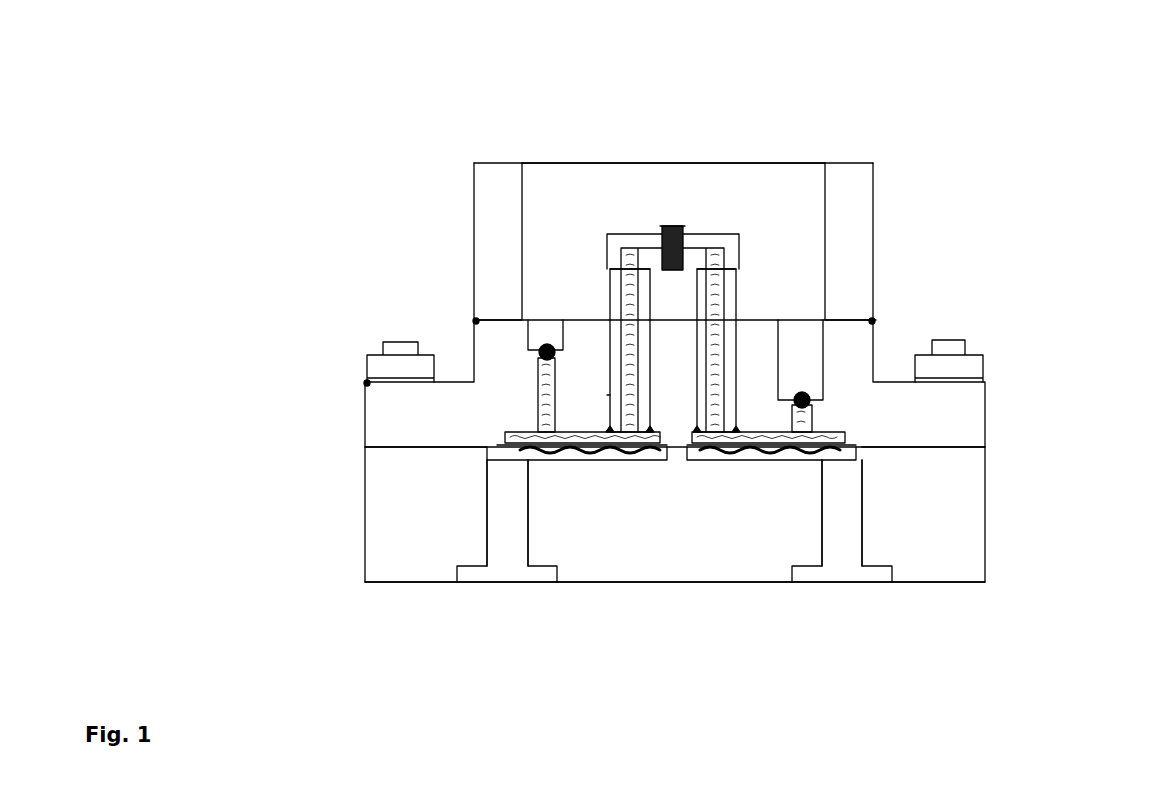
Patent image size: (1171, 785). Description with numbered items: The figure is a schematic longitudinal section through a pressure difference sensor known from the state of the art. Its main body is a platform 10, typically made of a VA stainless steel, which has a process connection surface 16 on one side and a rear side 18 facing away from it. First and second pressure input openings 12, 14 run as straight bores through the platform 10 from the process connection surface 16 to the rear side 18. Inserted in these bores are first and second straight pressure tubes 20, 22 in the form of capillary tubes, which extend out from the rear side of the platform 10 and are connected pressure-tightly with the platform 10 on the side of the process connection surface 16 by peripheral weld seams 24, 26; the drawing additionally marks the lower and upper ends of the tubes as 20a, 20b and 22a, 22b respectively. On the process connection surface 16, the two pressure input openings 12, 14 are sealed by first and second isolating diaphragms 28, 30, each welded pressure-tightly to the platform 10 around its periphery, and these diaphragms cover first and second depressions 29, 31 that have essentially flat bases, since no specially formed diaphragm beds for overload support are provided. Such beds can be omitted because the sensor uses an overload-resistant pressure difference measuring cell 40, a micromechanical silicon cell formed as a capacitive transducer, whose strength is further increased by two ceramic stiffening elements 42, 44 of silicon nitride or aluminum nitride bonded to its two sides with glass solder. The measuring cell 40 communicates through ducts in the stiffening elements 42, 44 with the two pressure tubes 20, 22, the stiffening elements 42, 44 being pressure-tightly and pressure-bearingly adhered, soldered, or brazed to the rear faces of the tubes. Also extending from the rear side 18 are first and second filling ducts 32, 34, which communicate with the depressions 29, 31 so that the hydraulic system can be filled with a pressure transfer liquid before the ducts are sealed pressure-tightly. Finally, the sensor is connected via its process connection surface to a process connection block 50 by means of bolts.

The platform 10 is at (367, 415).
The first pressure input opening 12 is at (600, 417).
The second pressure input opening 14 is at (750, 427).
The process connection surface 16 is at (413, 447).
The rear side 18 is at (572, 320).
The first pressure tube 20 is at (608, 292).
The lower end of first electrode 20a is at (607, 395).
The upper end of first electrode 20b is at (598, 272).
The second pressure tube 22 is at (737, 308).
The lower end of second electrode 22a is at (873, 320).
The upper end of second electrode 22b is at (745, 272).
The first peripheral weld seam 24 is at (610, 440).
The second peripheral weld seam 26 is at (700, 440).
The first isolating diaphragm 28 is at (517, 453).
The first depression 29 is at (577, 443).
The second isolating diaphragm 30 is at (718, 440).
The second depression 31 is at (775, 453).
The first filling duct 32 is at (540, 362).
The second filling duct 34 is at (812, 423).
The pressure difference measuring cell 40 is at (668, 226).
The first ceramic stiffening element 42 is at (628, 234).
The second ceramic stiffening element 44 is at (725, 234).
The process connection block 50 is at (410, 577).